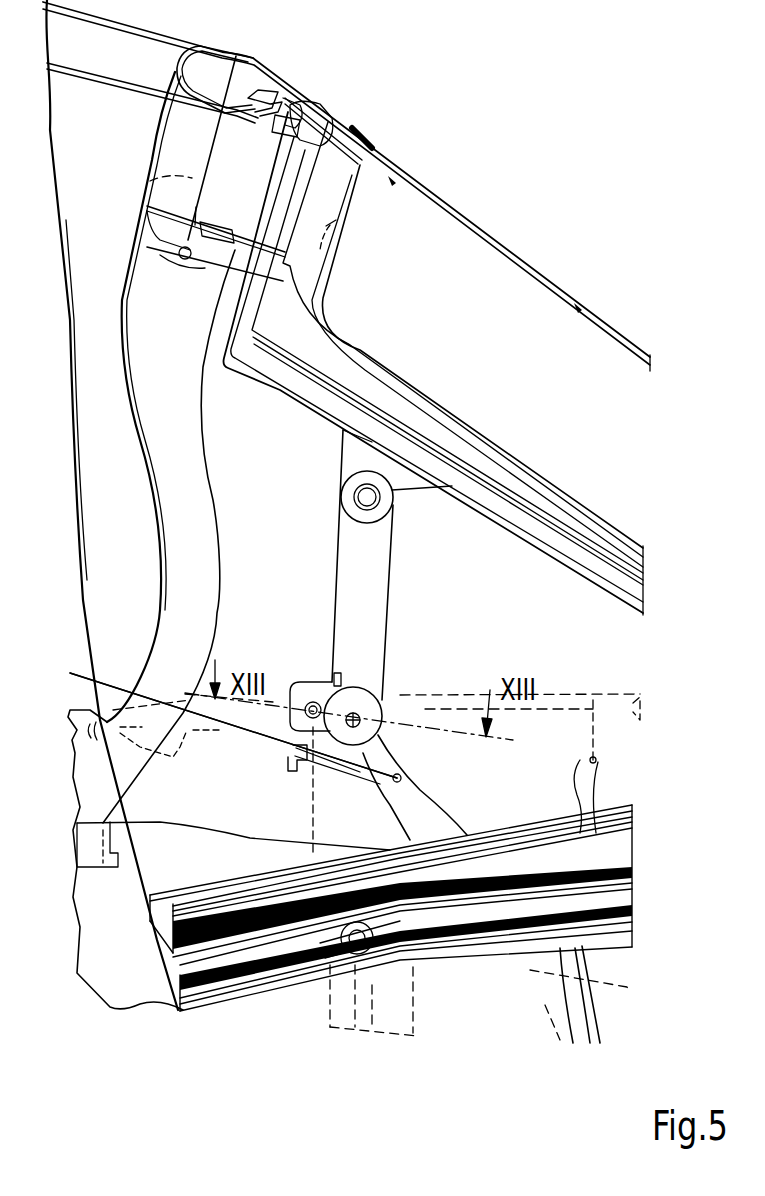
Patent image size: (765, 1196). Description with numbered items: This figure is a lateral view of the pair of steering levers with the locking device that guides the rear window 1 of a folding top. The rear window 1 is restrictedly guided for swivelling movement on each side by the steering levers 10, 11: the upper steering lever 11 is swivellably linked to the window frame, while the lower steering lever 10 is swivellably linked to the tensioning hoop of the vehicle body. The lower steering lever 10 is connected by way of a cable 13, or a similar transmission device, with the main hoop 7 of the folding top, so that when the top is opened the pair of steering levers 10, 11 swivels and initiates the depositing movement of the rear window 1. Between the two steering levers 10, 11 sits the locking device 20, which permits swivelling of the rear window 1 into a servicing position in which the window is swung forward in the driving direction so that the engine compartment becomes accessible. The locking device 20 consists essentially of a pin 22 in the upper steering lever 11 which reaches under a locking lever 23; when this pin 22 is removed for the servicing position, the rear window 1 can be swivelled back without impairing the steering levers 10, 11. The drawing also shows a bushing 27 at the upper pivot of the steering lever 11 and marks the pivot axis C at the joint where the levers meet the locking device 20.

The rear window 1 is at (482, 264).
The main hoop 7 is at (213, 68).
The lower steering lever 10 is at (438, 806).
The upper steering lever 11 is at (348, 494).
The cable 13 is at (246, 740).
The locking device 20 is at (282, 768).
The pin 22 is at (308, 702).
The locking lever 23 is at (326, 742).
The bushing 27 is at (348, 494).
The pivot axis C is at (360, 713).